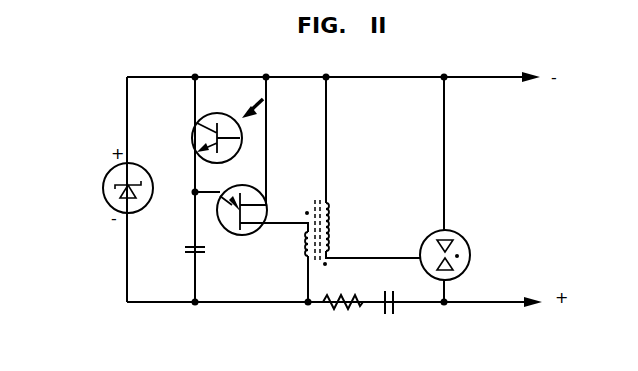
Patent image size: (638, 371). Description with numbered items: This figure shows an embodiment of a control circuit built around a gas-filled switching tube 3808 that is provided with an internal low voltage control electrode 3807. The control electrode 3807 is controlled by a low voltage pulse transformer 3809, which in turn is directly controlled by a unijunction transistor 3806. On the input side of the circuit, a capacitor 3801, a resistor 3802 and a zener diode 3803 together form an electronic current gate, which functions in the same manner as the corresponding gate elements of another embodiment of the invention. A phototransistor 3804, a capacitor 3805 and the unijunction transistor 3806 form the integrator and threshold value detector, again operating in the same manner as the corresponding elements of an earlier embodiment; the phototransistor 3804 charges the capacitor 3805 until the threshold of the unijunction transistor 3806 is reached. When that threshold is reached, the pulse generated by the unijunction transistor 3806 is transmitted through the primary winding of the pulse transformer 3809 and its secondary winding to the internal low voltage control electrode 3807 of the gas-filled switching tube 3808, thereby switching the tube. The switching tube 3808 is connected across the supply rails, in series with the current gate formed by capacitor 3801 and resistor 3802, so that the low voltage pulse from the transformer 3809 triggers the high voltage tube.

The capacitor 3801 is at (408, 316).
The resistor 3802 is at (341, 318).
The zener diode 3803 is at (96, 188).
The phototransistor 3804 is at (197, 131).
The capacitor 3805 is at (172, 263).
The unijunction transistor 3806 is at (250, 222).
The internal low voltage control electrode 3807 is at (368, 231).
The gas-filled switching tube 3808 is at (473, 255).
The low voltage pulse transformer 3809 is at (344, 219).